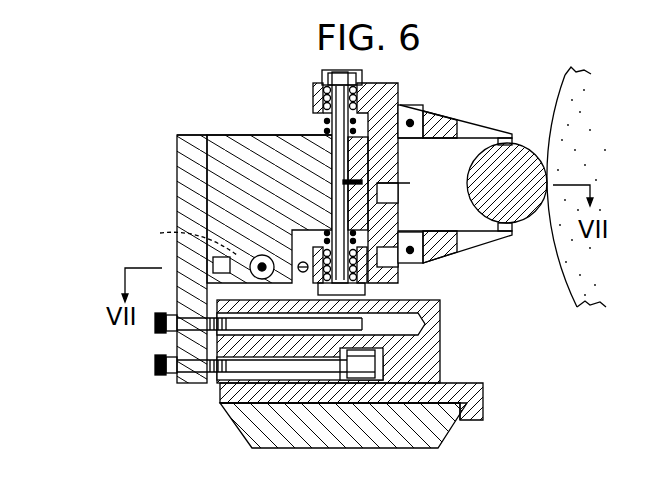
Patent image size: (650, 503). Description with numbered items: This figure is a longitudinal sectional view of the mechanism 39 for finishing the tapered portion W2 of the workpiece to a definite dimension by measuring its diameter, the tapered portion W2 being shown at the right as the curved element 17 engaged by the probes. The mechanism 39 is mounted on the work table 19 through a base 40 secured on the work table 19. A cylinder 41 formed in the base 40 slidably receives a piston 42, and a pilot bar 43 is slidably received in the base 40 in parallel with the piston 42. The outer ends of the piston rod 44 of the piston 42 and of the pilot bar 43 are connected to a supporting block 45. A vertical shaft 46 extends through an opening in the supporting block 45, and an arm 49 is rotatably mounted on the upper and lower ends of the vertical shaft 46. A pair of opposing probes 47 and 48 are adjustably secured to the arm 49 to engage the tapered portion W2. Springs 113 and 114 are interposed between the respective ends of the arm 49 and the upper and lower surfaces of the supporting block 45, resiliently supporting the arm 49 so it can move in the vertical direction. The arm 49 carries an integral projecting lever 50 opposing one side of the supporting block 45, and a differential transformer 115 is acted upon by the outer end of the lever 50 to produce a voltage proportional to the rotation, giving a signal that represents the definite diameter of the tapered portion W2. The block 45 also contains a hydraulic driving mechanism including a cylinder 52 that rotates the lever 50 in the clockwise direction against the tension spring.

The workpiece / wall 17 is at (565, 95).
The work table 19 is at (445, 428).
The mechanism for finishing the tapered portion 39 is at (196, 130).
The base 40 is at (436, 342).
The cylinder 41 is at (297, 388).
The piston 42 is at (368, 392).
The pilot bar 43 is at (215, 318).
The piston rod 44 is at (218, 375).
The supporting block 45 is at (229, 143).
The vertical shaft 46 is at (337, 173).
The probe 47 is at (458, 122).
The probe 48 is at (460, 247).
The arm 49 is at (418, 184).
The projecting lever 50 is at (190, 230).
The cylinder 52 is at (272, 240).
The spring 113 is at (322, 129).
The spring 114 is at (372, 222).
The differential transformer 115 is at (213, 262).
The tapered portion W2 is at (528, 162).